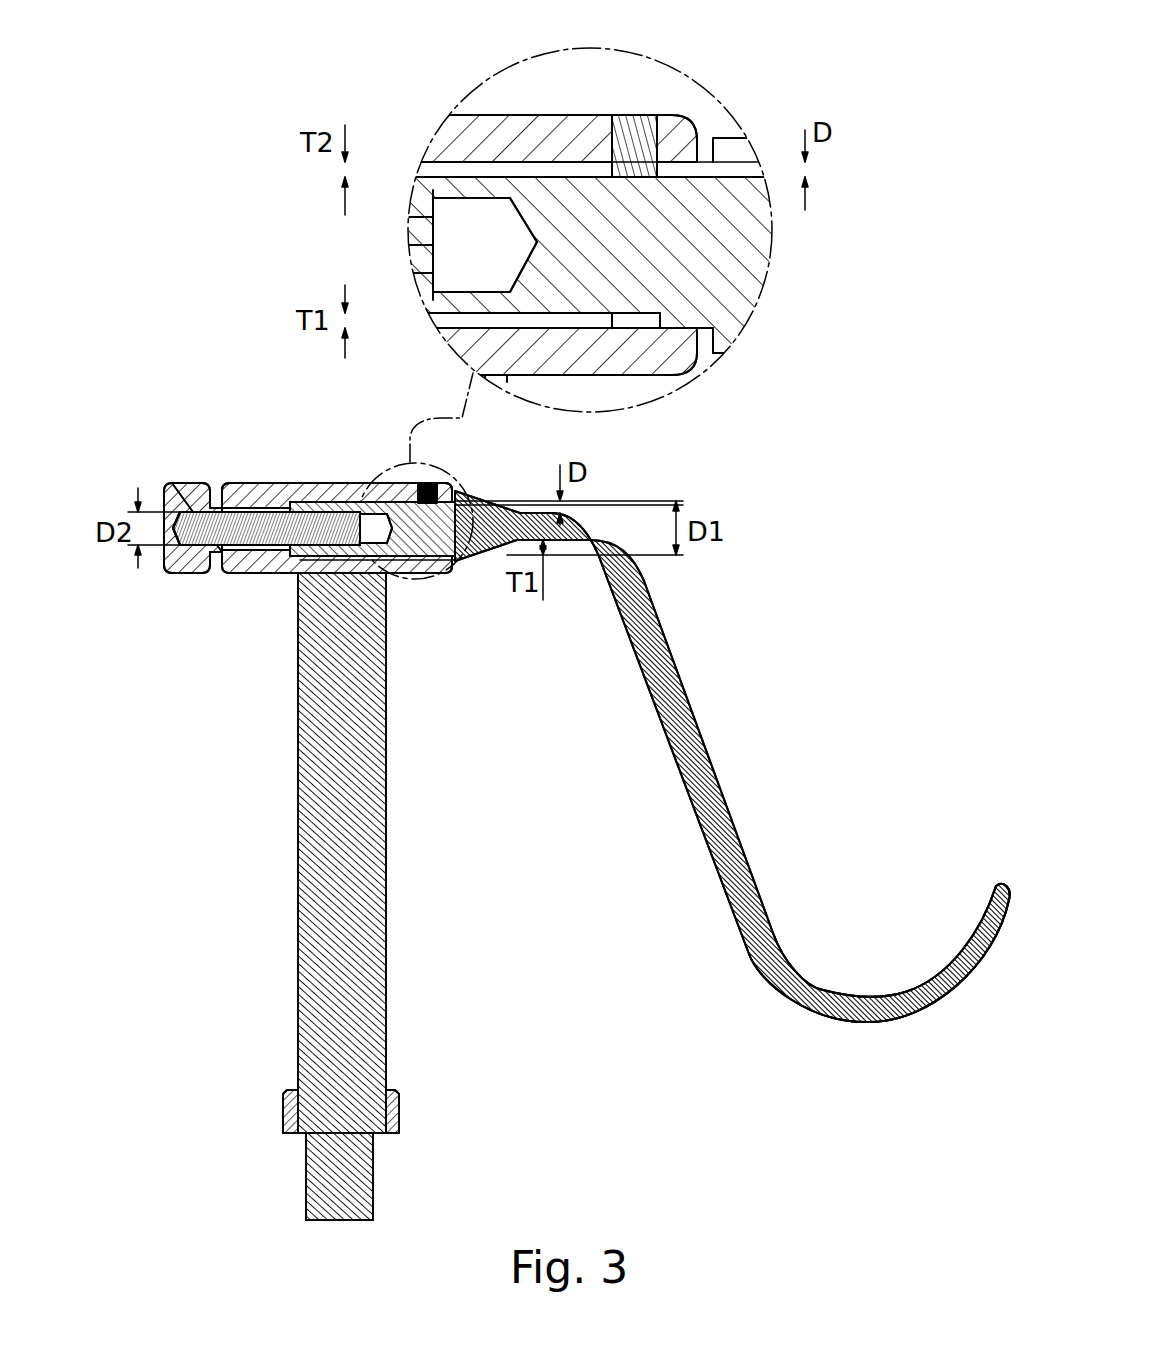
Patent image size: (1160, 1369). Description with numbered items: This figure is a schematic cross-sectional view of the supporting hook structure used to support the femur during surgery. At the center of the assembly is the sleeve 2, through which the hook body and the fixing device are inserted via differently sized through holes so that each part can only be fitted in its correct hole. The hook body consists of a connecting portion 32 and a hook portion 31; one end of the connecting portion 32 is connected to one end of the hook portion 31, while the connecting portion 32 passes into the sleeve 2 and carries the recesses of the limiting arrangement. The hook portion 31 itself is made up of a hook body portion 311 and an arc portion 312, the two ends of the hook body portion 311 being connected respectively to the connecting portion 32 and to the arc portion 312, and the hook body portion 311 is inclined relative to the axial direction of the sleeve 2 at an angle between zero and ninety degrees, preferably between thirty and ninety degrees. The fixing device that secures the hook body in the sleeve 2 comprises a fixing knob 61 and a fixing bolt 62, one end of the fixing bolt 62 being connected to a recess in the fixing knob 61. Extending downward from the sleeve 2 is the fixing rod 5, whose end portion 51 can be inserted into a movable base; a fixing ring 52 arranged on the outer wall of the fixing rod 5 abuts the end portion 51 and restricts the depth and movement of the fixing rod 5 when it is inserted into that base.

The sleeve 2 is at (290, 490).
The fixing rod 5 is at (367, 896).
The hook portion 31 is at (732, 756).
The connecting portion 32 is at (392, 485).
The end portion 51 is at (373, 1158).
The fixing ring 52 is at (399, 1098).
The fixing knob 61 is at (183, 490).
The fixing bolt 62 is at (257, 520).
The hook body portion 311 is at (683, 717).
The arc portion 312 is at (879, 942).